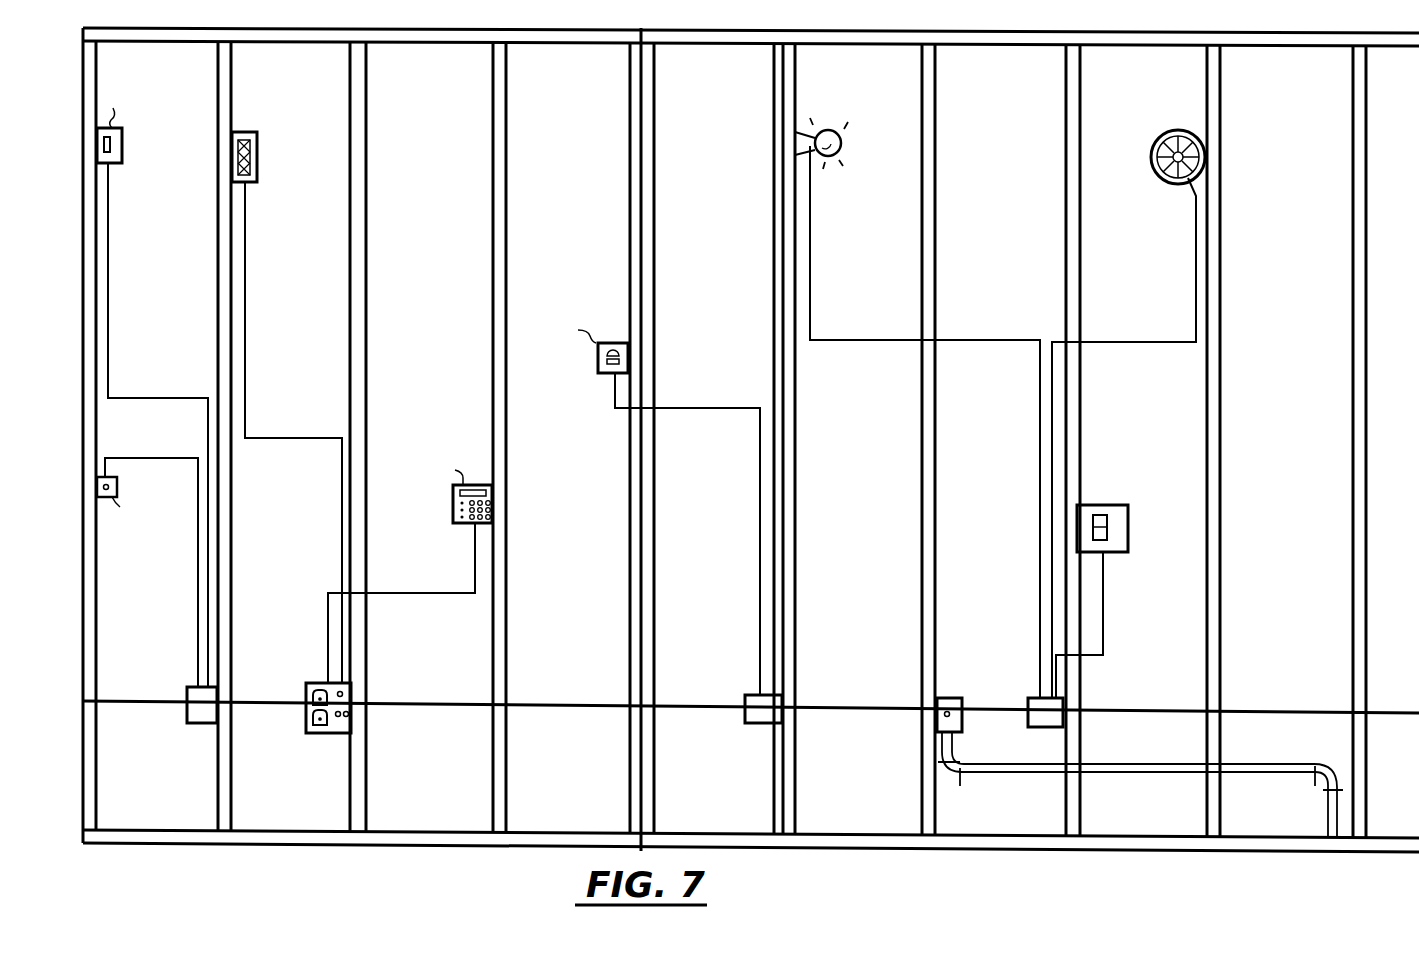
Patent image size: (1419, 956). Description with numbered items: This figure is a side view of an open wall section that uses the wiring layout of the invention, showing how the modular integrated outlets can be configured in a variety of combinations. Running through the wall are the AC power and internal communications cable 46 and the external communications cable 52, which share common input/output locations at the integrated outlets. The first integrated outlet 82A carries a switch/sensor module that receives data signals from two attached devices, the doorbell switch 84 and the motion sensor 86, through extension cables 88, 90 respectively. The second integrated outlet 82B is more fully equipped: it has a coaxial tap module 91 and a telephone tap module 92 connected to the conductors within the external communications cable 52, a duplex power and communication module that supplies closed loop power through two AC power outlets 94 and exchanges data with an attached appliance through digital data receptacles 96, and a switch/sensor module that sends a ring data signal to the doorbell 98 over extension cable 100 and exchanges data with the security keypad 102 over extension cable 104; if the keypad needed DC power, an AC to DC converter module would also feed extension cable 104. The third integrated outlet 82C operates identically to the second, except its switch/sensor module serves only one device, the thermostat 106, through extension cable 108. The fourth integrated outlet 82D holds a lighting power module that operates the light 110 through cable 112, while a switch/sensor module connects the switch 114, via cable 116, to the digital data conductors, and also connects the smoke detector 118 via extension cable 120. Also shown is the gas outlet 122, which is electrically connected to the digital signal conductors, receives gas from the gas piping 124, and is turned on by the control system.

The AC power and internal communications cable 46 is at (425, 703).
The external communications cable 52 is at (348, 237).
The integrated outlet 82A is at (200, 725).
The integrated outlet 82B is at (334, 735).
The integrated outlet 82C is at (762, 724).
The integrated outlet 82D is at (1041, 728).
The doorbell switch 84 is at (118, 487).
The motion sensor 86 is at (122, 150).
The extension cable 88 is at (140, 458).
The extension cable 90 is at (190, 396).
The coaxial tap module 91 is at (350, 718).
The telephone tap module 92 is at (345, 692).
The AC power outlets 94 is at (313, 720).
The digital data receptacles 96 is at (313, 691).
The doorbell 98 is at (257, 150).
The extension cable 100 is at (270, 438).
The security keypad 102 is at (452, 512).
The extension cable 104 is at (401, 593).
The thermostat 106 is at (596, 380).
The extension cable 108 is at (698, 408).
The light 110 is at (832, 130).
The cable 112 is at (845, 340).
The switch 114 is at (1105, 505).
The cable 116 is at (1104, 585).
The smoke detector 118 is at (1168, 184).
The extension cable 120 is at (1150, 342).
The gas outlet 122 is at (952, 698).
The gas piping 124 is at (1113, 772).